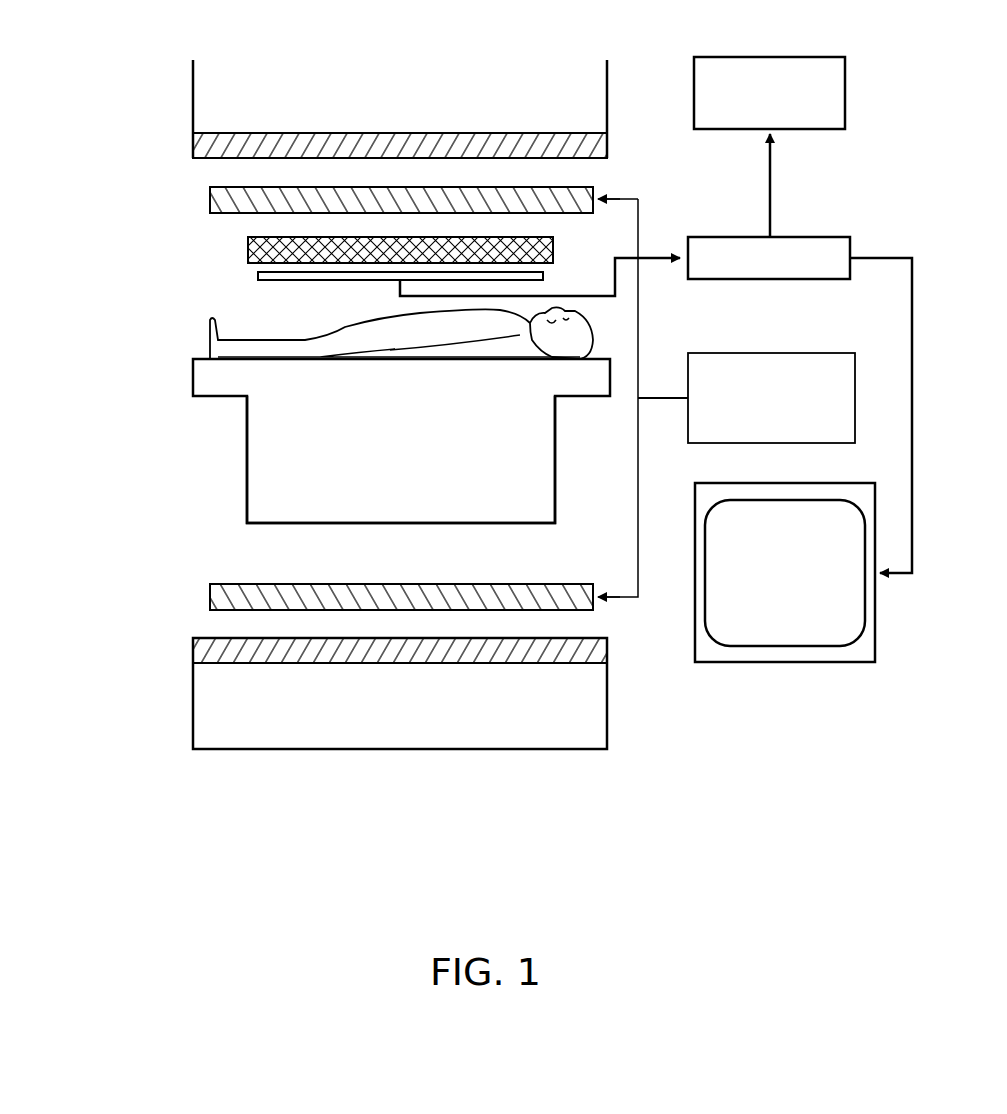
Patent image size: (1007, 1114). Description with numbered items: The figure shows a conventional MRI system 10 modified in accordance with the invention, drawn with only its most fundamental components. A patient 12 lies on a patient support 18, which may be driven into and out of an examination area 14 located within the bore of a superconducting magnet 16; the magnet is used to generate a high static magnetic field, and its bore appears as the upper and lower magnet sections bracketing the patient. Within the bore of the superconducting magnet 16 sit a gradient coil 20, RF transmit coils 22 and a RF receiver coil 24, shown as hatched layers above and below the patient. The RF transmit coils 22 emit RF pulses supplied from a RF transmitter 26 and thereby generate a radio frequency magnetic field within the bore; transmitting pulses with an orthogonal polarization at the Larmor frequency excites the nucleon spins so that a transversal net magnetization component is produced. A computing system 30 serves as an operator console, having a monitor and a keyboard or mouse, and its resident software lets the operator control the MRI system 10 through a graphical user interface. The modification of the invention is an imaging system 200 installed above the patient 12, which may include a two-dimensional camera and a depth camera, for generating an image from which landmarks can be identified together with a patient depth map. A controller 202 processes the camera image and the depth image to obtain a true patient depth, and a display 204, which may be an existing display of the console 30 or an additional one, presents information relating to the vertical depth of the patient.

The MRI system 10 is at (92, 122).
The patient 12 is at (333, 330).
The examination area 14 is at (214, 446).
The superconducting magnet 16 is at (203, 96).
The patient support 18 is at (203, 377).
The gradient coil 20 is at (203, 145).
The RF transmit coils 22 is at (218, 200).
The RF receiver coil 24 is at (248, 248).
The RF transmitter 26 is at (770, 353).
The computing system 30 is at (713, 55).
The imaging system 200 is at (545, 277).
The controller 202 is at (816, 237).
The display 204 is at (793, 662).